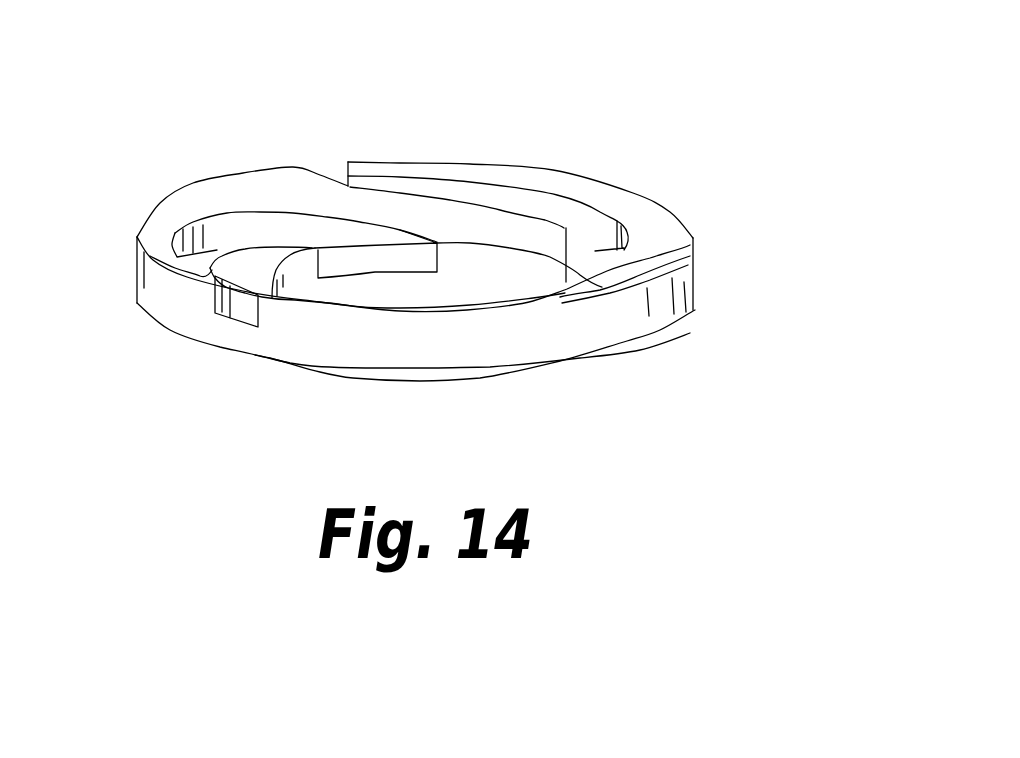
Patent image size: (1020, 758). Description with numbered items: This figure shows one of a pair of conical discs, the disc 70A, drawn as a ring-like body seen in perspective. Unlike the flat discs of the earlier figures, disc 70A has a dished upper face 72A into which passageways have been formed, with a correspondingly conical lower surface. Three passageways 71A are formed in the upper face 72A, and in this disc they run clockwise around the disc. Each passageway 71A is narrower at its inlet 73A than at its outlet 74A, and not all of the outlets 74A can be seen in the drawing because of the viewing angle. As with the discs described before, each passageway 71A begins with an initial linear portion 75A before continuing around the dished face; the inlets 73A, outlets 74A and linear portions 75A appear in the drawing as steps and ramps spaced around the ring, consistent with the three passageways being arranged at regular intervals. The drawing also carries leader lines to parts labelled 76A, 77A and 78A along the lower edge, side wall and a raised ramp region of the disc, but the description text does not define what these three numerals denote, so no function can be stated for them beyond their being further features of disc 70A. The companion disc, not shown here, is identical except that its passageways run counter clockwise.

The conical disc 70A is at (557, 172).
The passageway 71A is at (218, 240).
The upper face 72A is at (292, 192).
The inlet 73A is at (338, 173).
The outlet 74A is at (565, 285).
The initial linear portion 75A is at (375, 175).
The bottom edge 76A is at (470, 368).
The outer side wall 77A is at (423, 352).
The ramp segment 78A is at (476, 279).